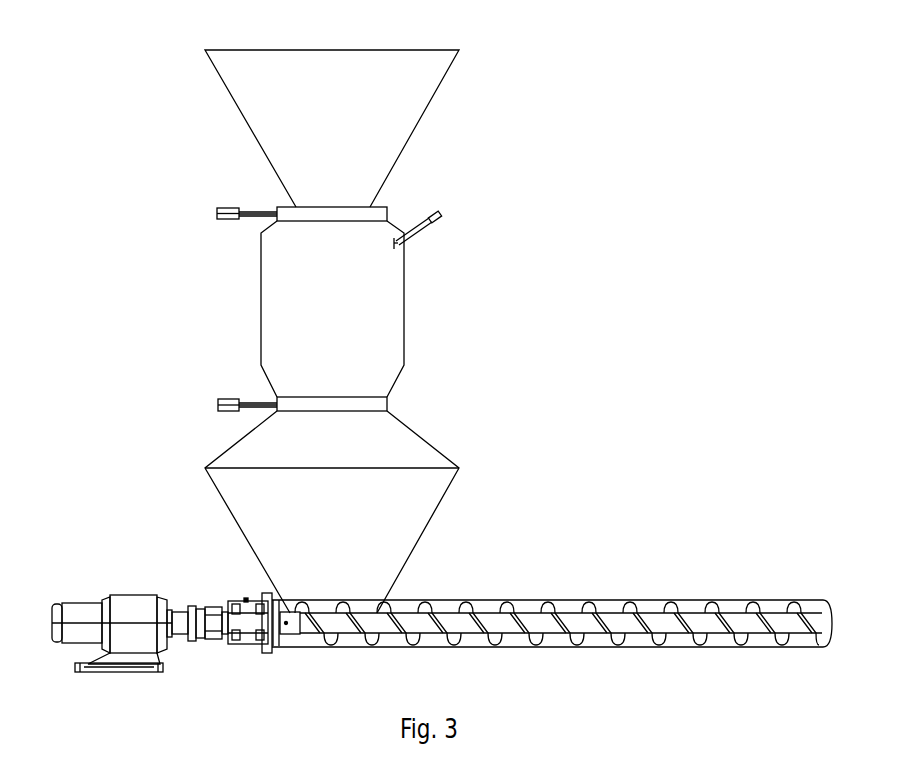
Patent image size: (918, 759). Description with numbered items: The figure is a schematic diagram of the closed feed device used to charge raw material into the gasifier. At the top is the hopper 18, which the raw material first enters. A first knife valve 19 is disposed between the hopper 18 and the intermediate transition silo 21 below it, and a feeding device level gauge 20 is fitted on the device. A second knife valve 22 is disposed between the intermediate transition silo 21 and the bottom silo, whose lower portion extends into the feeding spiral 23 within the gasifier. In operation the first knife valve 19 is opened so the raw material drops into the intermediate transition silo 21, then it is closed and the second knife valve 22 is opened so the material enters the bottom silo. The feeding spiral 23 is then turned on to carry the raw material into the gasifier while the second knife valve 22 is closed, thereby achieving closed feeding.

The hopper 18 is at (365, 133).
The first knife valve 19 is at (228, 208).
The feeding device level gauge 20 is at (436, 223).
The intermediate transition silo 21 is at (280, 302).
The second knife valve 22 is at (222, 402).
The feeding spiral 23 is at (612, 622).